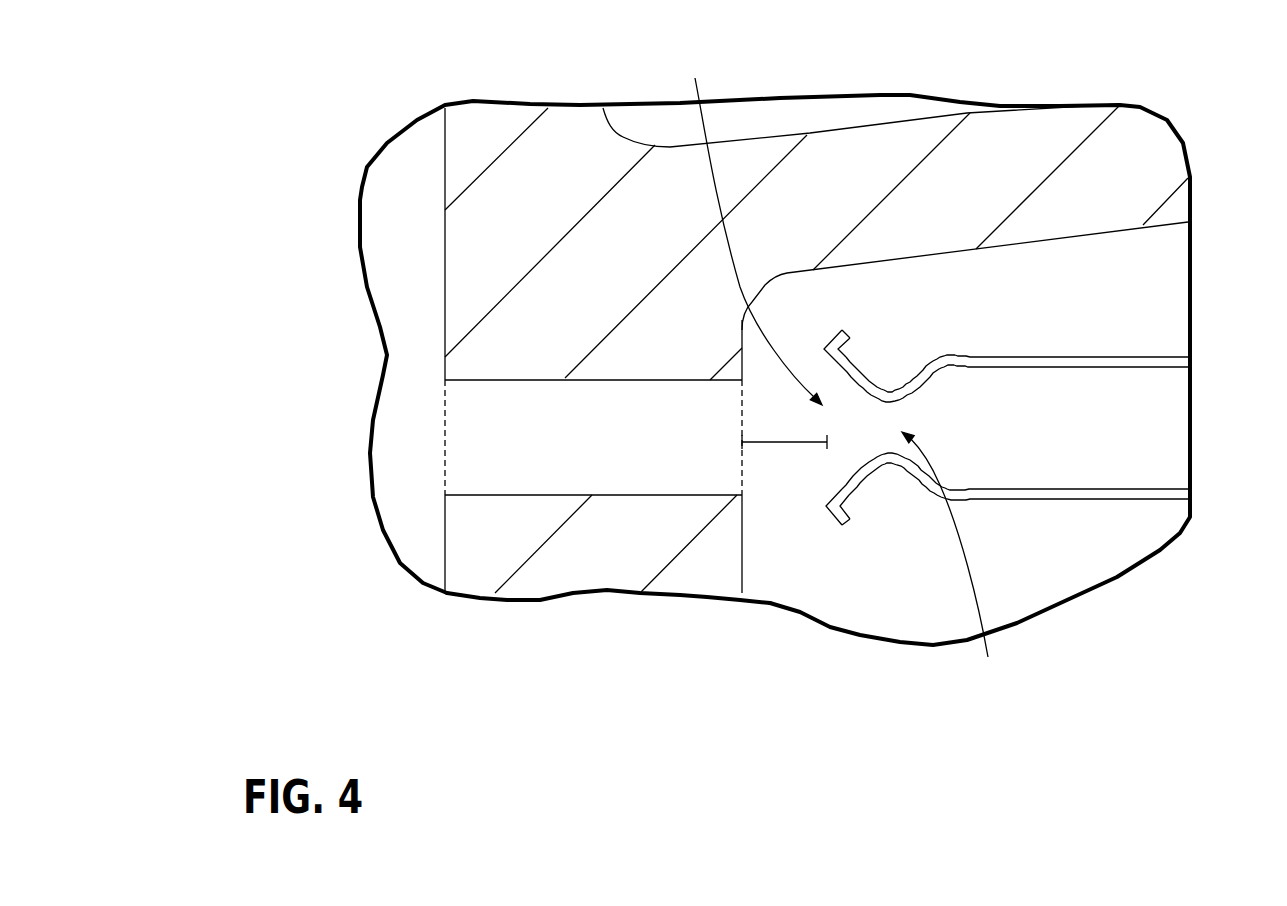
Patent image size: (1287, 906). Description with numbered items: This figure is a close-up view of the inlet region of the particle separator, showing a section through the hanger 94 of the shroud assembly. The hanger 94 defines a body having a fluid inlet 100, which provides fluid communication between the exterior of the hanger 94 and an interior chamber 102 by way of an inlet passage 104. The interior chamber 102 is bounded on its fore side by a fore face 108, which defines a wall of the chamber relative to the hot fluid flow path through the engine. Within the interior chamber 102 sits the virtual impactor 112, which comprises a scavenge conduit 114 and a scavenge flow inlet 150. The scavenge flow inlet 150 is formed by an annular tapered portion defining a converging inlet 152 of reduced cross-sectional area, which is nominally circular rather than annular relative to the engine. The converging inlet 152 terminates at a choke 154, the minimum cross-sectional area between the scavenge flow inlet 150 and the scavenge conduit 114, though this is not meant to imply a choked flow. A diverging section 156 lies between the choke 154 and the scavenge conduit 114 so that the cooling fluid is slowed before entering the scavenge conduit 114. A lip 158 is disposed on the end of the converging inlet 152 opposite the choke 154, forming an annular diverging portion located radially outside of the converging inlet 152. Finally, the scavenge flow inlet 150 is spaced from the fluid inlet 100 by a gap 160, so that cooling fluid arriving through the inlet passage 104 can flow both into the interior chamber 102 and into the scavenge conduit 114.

The hanger 94 is at (445, 223).
The fluid inlet 100 is at (742, 468).
The interior chamber 102 is at (1036, 594).
The inlet passage 104 is at (569, 462).
The fore face 108 is at (742, 563).
The virtual impactor 112 is at (1103, 357).
The scavenge conduit 114 is at (1108, 446).
The scavenge flow inlet 150 is at (747, 228).
The converging inlet 152 is at (860, 366).
The choke 154 is at (955, 563).
The diverging section 156 is at (932, 493).
The lip 158 is at (832, 338).
The gap 160 is at (780, 442).